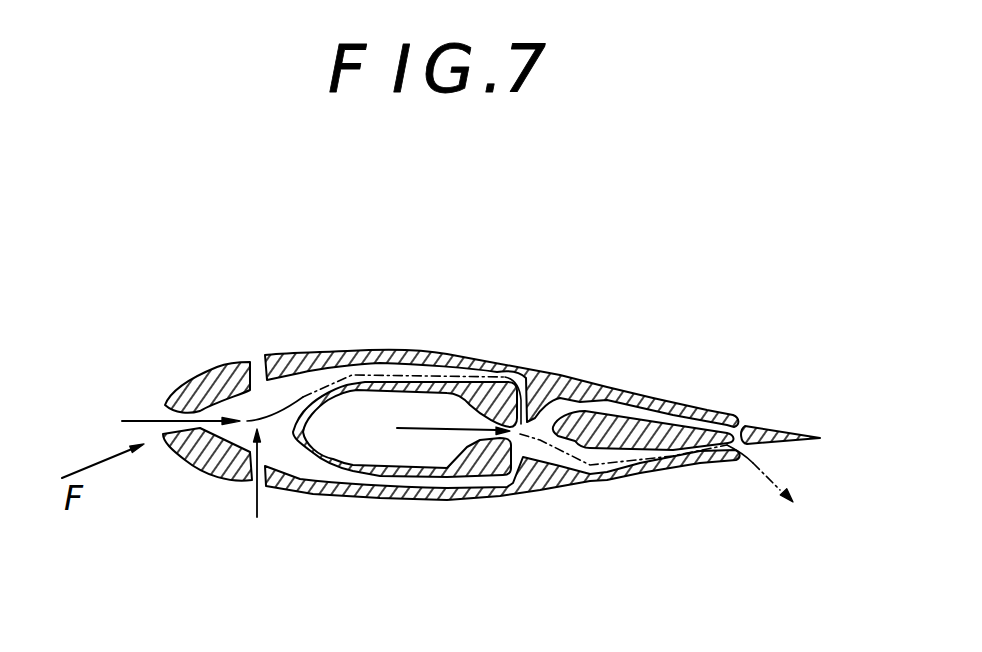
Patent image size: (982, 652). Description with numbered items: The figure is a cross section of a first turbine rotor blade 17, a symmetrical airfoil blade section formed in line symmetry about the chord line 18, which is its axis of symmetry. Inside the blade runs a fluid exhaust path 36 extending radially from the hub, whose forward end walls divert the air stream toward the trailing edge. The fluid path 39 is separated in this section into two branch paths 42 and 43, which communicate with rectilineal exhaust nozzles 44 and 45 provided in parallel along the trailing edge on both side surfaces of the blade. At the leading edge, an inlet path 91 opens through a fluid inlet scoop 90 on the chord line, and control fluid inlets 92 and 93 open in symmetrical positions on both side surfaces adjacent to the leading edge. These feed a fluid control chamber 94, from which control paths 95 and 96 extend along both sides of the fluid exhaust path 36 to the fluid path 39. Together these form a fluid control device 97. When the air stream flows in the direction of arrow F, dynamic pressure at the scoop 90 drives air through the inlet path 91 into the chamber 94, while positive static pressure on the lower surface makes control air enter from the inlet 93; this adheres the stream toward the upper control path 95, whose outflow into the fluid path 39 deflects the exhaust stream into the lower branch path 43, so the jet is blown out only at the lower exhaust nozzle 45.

The first turbine rotor blade 17 is at (668, 384).
The chord line 18 is at (122, 420).
The fluid exhaust path 36 is at (353, 394).
The fluid path 39 is at (557, 398).
The branch path 42 is at (608, 406).
The branch path 43 is at (592, 478).
The exhaust nozzle 44 is at (747, 417).
The exhaust nozzle 45 is at (740, 463).
The fluid inlet scoop 90 is at (168, 419).
The inlet path 91 is at (189, 462).
The control fluid inlet 92 is at (258, 352).
The control fluid inlet 93 is at (253, 497).
The fluid control chamber 94 is at (304, 496).
The control path 95 is at (465, 357).
The control path 96 is at (388, 494).
The fluid control device 97 is at (304, 350).